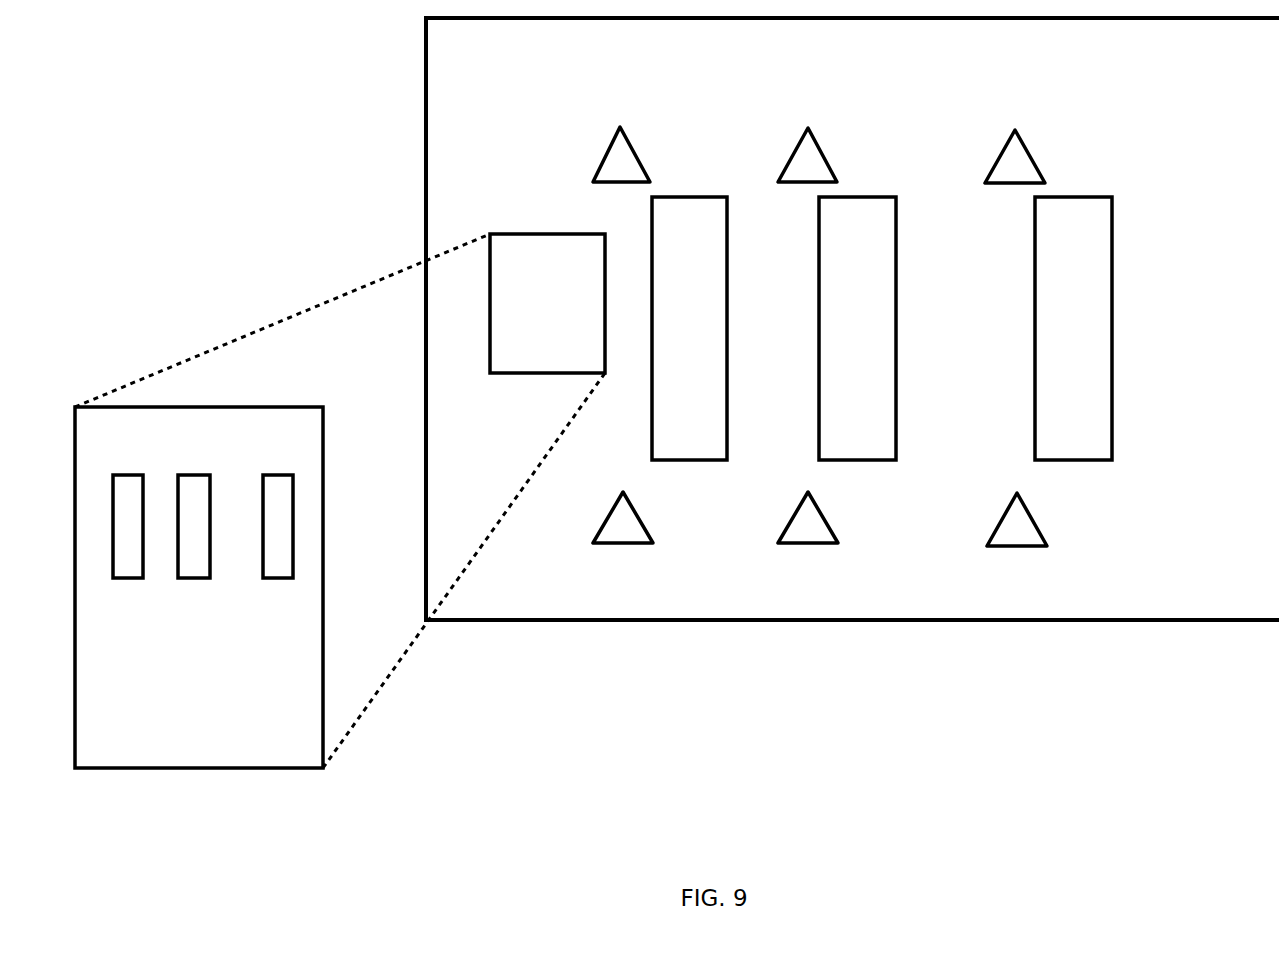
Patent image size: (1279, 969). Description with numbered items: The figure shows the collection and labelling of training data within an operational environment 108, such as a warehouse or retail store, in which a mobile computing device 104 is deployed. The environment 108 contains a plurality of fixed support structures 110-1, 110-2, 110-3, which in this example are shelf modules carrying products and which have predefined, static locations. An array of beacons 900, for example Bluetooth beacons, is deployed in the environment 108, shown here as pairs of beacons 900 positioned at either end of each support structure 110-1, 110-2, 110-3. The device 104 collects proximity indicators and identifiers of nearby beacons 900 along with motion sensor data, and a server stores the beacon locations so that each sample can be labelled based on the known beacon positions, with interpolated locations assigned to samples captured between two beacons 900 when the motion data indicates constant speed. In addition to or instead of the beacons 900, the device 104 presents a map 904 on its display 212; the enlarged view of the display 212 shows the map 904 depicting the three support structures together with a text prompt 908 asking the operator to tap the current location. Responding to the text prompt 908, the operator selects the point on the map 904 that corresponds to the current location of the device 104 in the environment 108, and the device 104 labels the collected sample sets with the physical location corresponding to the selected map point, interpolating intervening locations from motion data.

The operational environment 108 is at (767, 621).
The mobile computing device 104 is at (547, 303).
The support structure 110-1 is at (696, 210).
The support structure 110-2 is at (865, 202).
The support structure 110-3 is at (1087, 218).
The beacon 900 is at (620, 127).
The display 212 is at (208, 768).
The map 904 is at (257, 450).
The text prompt 908 is at (252, 740).